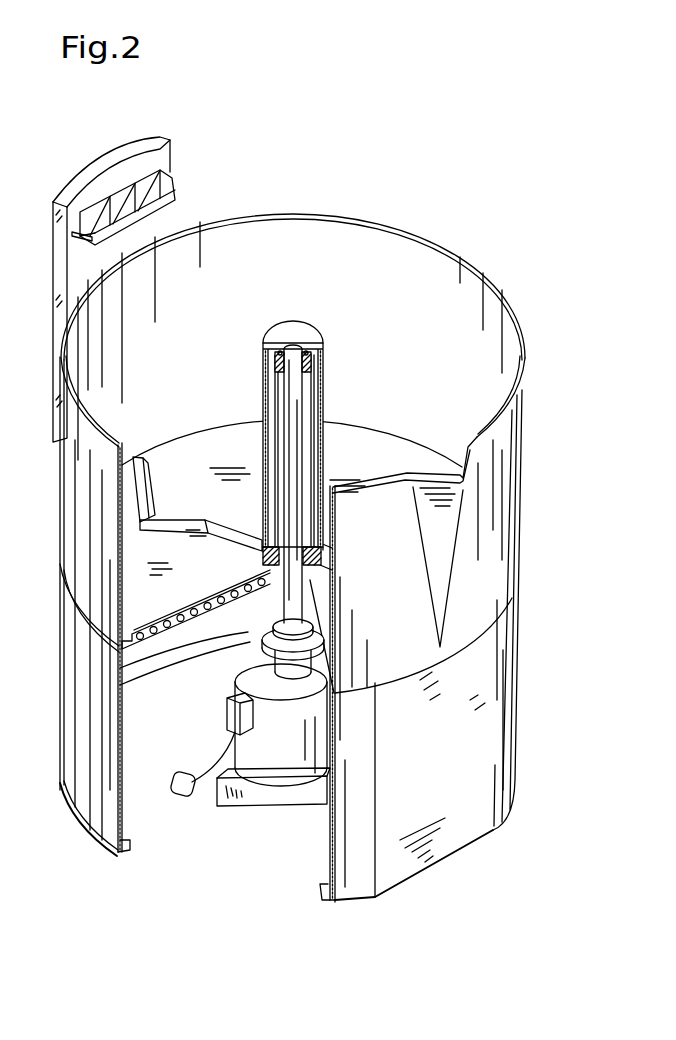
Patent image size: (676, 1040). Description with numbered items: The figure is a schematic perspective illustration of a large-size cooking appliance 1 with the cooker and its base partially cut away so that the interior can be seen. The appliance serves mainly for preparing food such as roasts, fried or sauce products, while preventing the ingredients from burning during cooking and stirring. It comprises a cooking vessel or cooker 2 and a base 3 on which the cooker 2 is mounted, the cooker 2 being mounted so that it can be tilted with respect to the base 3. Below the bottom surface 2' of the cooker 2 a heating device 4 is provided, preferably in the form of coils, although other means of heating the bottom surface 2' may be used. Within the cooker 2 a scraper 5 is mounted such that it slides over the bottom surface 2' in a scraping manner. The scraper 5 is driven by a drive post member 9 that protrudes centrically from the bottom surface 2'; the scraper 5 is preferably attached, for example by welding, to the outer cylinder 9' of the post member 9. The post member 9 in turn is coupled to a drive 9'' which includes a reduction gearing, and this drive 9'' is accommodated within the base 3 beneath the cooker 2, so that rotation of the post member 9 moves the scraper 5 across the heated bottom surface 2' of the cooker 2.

The large-size cooking appliance 1 is at (430, 186).
The cooking vessel or cooker 2 is at (312, 629).
The bottom surface of the cooker 2' is at (292, 556).
The base 3 is at (518, 697).
The heating device 4 is at (233, 598).
The scraper 5 is at (230, 532).
The drive post member 9 is at (314, 443).
The outer cylinder of the post member 9' is at (326, 484).
The drive 9'' is at (250, 726).